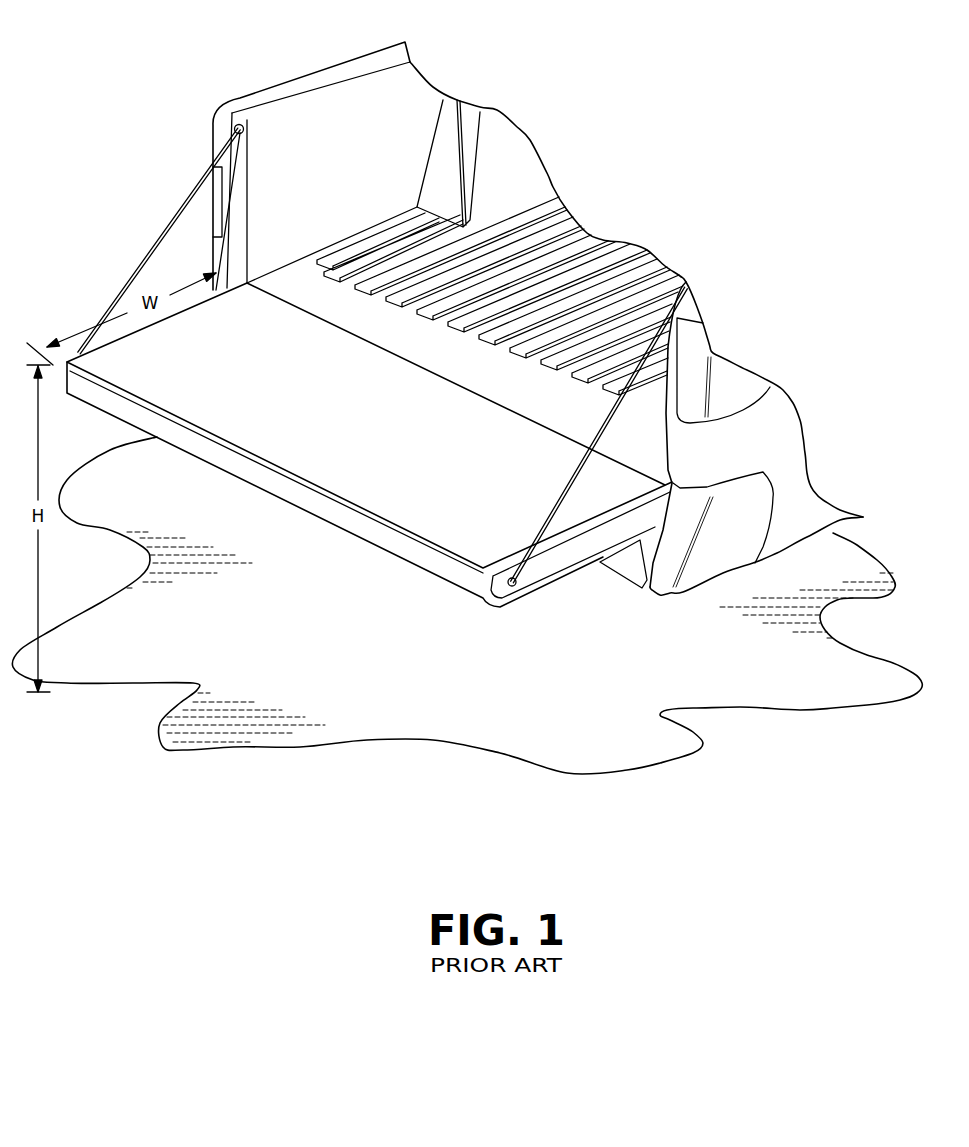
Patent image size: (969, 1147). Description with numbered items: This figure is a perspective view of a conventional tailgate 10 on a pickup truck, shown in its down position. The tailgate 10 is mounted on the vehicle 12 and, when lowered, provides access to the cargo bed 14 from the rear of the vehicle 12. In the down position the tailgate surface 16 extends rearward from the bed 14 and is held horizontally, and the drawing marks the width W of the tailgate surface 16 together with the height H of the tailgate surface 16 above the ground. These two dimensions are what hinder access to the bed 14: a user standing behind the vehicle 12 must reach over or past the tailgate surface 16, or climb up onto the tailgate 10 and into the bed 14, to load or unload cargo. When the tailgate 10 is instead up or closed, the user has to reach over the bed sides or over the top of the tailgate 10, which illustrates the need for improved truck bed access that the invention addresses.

The tailgate 10 is at (369, 461).
The vehicle 12 is at (218, 252).
The cargo bed 14 is at (272, 160).
The tailgate surface 16 is at (293, 447).